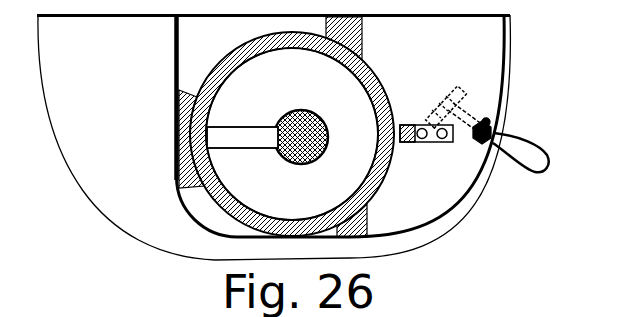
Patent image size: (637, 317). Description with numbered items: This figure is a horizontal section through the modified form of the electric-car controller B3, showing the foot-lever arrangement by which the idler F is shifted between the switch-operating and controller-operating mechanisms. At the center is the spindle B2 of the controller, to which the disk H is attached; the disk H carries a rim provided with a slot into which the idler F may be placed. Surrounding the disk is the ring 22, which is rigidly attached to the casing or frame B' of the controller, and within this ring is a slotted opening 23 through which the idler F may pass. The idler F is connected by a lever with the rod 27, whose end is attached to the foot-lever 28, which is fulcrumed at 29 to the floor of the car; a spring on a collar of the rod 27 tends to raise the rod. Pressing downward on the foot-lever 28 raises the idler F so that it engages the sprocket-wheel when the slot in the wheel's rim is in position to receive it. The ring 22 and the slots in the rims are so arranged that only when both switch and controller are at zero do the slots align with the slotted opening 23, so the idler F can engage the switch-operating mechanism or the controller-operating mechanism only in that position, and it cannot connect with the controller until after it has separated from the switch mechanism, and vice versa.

The casing B' is at (312, 126).
The controller B3 is at (273, 137).
The spindle B2 is at (318, 118).
The ring 22 is at (306, 52).
The slotted opening 23 is at (222, 128).
The idler F is at (260, 142).
The disk H is at (292, 134).
The rod 27 is at (472, 140).
The foot-lever 28 is at (527, 147).
The fulcrum 29 is at (453, 87).